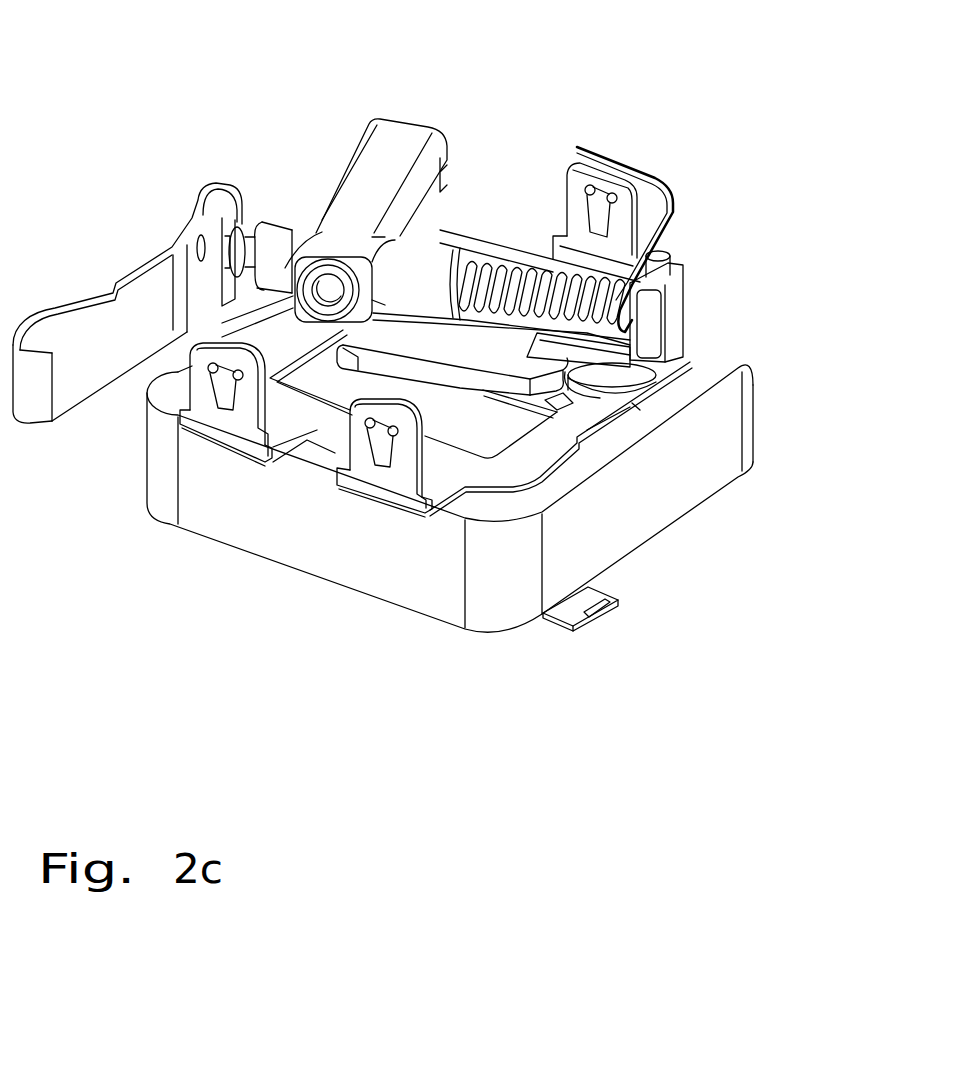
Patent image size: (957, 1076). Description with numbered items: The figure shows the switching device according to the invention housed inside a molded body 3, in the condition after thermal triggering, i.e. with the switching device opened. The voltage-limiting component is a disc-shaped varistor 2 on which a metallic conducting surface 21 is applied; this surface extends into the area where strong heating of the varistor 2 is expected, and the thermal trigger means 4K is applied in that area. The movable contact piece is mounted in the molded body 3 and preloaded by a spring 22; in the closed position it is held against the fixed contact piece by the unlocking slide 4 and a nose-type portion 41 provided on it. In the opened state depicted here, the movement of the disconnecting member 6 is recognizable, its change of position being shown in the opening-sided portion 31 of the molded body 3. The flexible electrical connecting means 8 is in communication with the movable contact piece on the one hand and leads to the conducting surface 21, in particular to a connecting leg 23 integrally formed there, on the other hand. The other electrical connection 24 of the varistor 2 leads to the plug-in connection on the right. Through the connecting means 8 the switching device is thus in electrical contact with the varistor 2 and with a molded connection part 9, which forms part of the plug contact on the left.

The varistor 2 is at (731, 411).
The metallic conducting surface 21 is at (540, 455).
The electrical connection 24 is at (607, 627).
The thermal trigger means 4K is at (645, 405).
The nose-type portion 41 is at (682, 300).
The unlocking slide 4 is at (475, 357).
The opening-sided portion 31 is at (318, 318).
The disconnecting member 6 is at (333, 292).
The molded body 3 is at (390, 138).
The spring 22 is at (523, 272).
The connecting leg 23 is at (582, 175).
The flexible electrical connecting means 8 is at (672, 197).
The molded connection part 9 is at (135, 265).